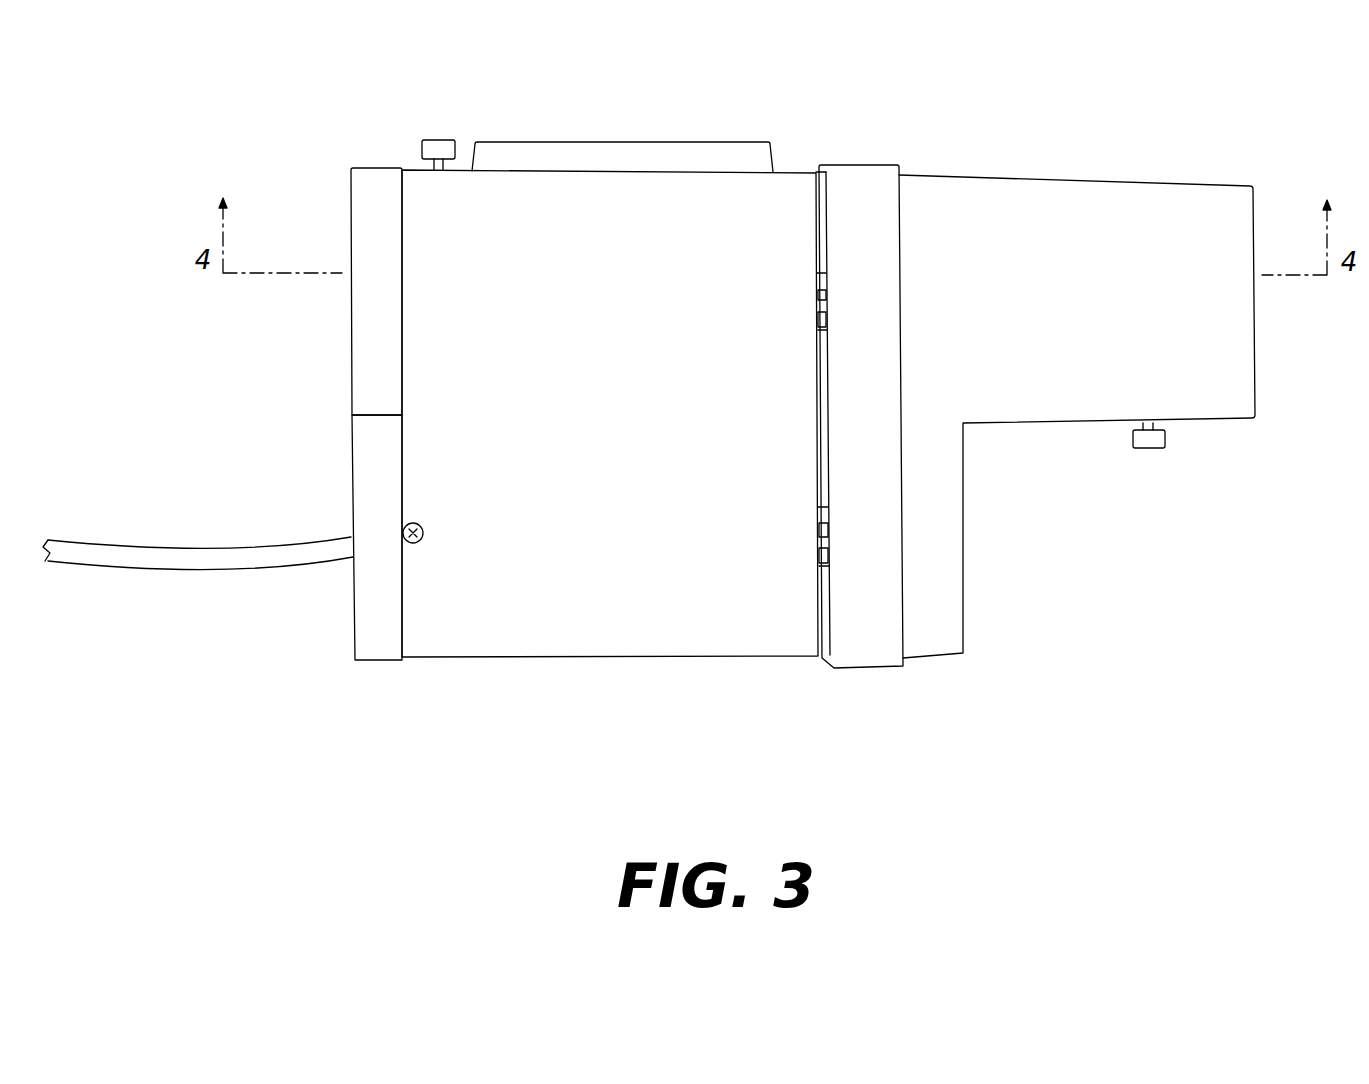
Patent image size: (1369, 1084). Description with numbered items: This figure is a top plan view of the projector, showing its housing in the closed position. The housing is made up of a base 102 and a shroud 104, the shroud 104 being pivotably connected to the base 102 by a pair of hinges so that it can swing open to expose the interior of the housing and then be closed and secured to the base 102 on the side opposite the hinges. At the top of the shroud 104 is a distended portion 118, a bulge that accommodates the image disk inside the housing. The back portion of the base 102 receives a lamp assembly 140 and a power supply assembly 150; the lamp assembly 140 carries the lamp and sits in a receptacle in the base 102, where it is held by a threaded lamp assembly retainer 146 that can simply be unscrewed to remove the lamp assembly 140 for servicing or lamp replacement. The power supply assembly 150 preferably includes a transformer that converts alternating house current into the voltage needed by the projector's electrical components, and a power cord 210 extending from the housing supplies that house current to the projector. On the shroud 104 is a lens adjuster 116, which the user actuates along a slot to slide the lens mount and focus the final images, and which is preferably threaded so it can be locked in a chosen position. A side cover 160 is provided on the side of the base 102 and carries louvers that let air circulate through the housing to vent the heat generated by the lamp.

The base 102 is at (613, 414).
The shroud 104 is at (1061, 313).
The lens adjuster 116 is at (1150, 440).
The distended portion 118 is at (868, 190).
The lamp assembly 140 is at (360, 355).
The lamp assembly retainer 146 is at (437, 152).
The power supply assembly 150 is at (360, 475).
The side cover 160 is at (652, 152).
The power cord 210 is at (230, 573).